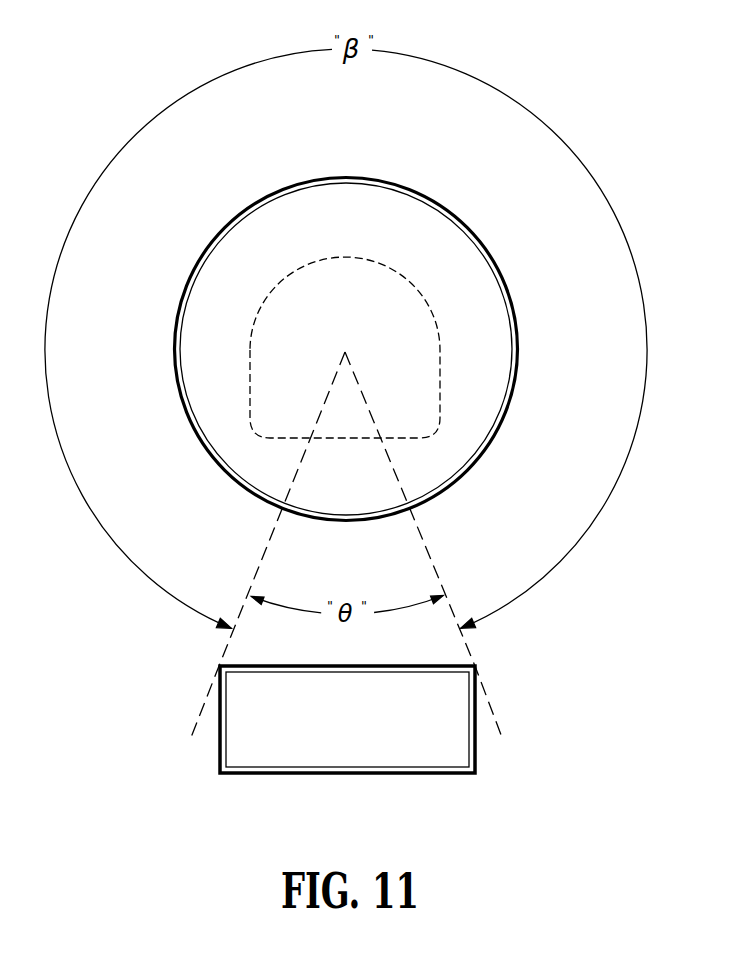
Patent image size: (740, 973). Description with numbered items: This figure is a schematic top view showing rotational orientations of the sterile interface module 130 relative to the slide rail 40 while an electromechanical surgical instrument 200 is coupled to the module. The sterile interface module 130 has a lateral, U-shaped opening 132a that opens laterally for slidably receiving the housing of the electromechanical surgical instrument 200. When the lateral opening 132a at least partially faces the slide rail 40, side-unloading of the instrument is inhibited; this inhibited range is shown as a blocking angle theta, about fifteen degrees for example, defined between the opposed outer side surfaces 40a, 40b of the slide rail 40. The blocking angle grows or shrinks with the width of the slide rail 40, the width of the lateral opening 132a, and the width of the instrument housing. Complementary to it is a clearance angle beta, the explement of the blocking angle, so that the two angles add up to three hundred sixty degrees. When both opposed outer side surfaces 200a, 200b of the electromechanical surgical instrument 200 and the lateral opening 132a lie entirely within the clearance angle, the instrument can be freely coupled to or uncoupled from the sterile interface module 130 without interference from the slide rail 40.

The sterile interface module 130 is at (448, 201).
The electromechanical surgical instrument 200 is at (239, 405).
The outer side surface of electromechanical surgical instrument 200a is at (440, 333).
The outer side surface of electromechanical surgical instrument 200b is at (250, 347).
The U-shaped opening 132a is at (360, 452).
The slide rail 40 is at (335, 724).
The outer side surface of slide rail 40a is at (477, 738).
The outer side surface of slide rail 40b is at (218, 742).